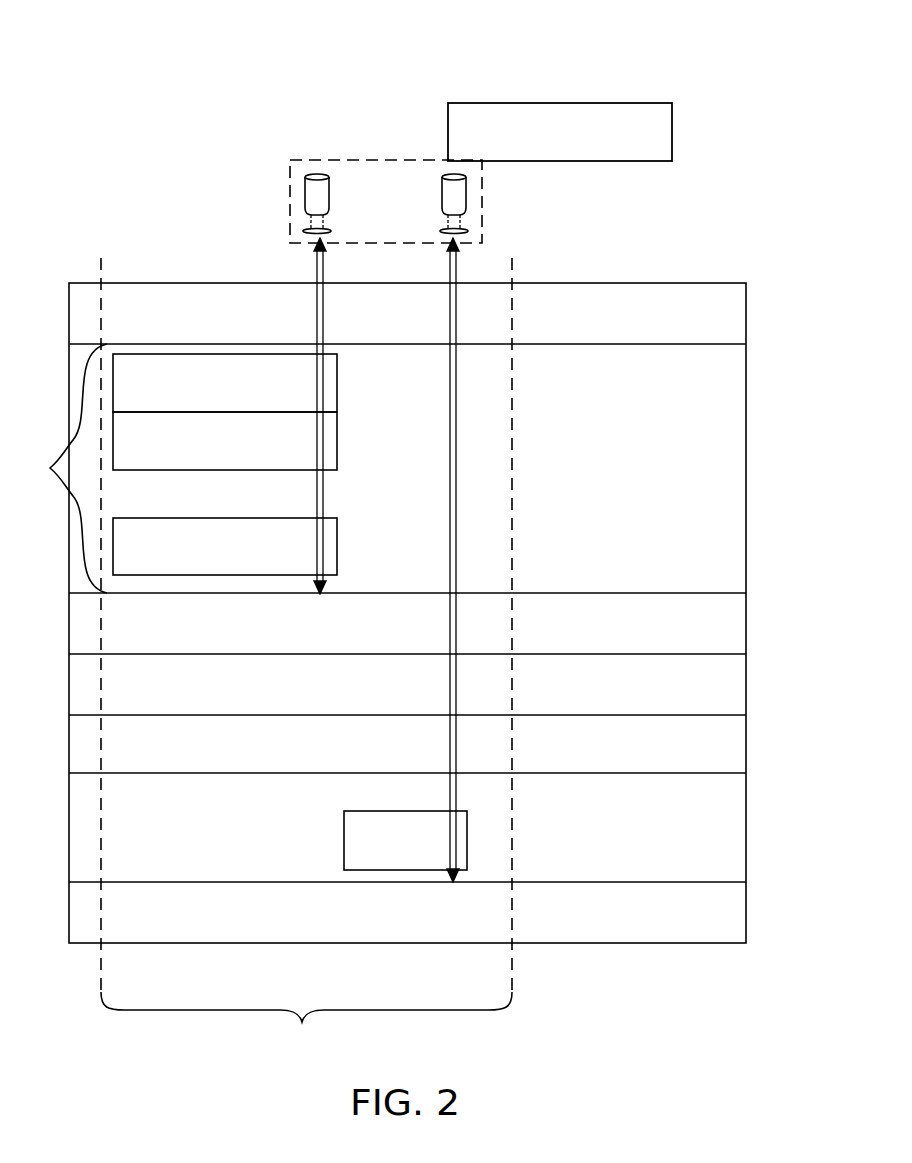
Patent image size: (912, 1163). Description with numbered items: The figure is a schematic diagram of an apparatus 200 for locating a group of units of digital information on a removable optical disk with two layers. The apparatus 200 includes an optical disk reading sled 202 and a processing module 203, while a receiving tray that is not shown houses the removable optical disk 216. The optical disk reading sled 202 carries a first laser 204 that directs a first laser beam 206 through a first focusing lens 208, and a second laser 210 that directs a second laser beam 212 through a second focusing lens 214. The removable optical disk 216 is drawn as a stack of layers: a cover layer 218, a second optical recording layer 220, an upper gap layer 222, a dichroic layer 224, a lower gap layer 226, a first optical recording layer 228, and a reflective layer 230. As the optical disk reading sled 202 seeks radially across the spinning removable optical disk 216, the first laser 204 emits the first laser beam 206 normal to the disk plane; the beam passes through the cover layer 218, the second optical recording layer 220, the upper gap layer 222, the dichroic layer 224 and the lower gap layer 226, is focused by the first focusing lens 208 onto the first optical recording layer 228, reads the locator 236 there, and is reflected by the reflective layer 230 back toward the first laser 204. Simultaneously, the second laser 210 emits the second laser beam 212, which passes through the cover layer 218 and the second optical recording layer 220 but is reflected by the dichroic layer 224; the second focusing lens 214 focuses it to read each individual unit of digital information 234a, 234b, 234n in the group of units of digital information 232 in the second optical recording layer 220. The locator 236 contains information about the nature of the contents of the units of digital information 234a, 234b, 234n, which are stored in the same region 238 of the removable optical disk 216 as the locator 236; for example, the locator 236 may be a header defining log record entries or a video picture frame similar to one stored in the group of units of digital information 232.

The apparatus 200 is at (152, 62).
The optical disk reading sled 202 is at (372, 160).
The processing module 203 is at (544, 155).
The first laser 204 is at (444, 177).
The first laser beam 206 is at (458, 310).
The first focusing lens 208 is at (470, 231).
The second laser 210 is at (307, 178).
The second laser beam 212 is at (316, 310).
The second focusing lens 214 is at (305, 231).
The removable optical disk 216 is at (747, 318).
The cover layer 218 is at (646, 335).
The second optical recording layer 220 is at (646, 395).
The upper gap layer 222 is at (646, 646).
The dichroic layer 224 is at (646, 706).
The lower gap layer 226 is at (646, 768).
The first optical recording layer 228 is at (649, 826).
The reflective layer 230 is at (649, 935).
The group of units of digital information 232 is at (64, 468).
The unit of digital information 234a is at (204, 406).
The unit of digital information 234b is at (204, 465).
The unit of digital information 234n is at (204, 571).
The locator 236 is at (389, 863).
The region 238 is at (306, 654).